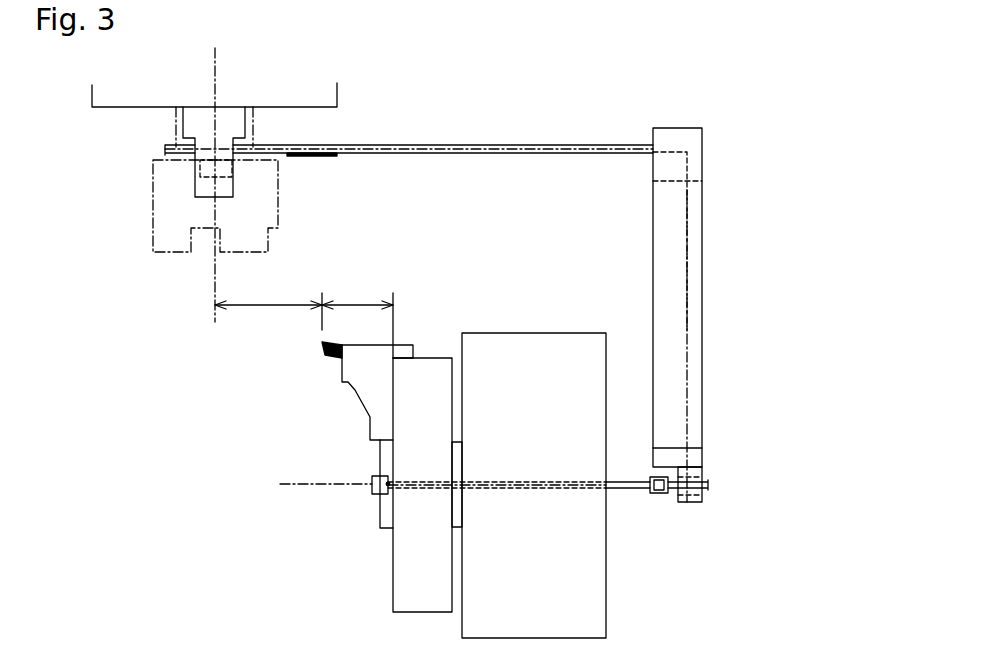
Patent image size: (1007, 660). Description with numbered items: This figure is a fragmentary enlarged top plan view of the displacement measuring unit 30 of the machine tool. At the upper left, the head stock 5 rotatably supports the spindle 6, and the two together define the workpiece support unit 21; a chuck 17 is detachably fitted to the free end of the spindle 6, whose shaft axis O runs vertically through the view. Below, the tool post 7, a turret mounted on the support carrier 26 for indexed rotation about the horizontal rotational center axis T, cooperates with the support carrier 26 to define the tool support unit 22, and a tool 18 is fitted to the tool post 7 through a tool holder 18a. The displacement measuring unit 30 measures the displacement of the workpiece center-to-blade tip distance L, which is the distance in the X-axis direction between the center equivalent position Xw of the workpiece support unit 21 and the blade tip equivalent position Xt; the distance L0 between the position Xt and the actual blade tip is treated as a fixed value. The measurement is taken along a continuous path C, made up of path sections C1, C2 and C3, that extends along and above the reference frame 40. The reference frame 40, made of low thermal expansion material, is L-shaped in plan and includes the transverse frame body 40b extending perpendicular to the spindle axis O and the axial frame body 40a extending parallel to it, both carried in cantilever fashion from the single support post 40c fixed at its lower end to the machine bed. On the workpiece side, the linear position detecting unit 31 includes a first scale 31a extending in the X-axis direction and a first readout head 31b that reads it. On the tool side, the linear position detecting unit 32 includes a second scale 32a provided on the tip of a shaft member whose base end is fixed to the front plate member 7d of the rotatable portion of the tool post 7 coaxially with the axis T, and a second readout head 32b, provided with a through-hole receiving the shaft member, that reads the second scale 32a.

The head stock 5 is at (196, 81).
The spindle 6 is at (253, 125).
The tool post 7 is at (412, 577).
The front plate member 7d is at (385, 457).
The chuck 17 is at (177, 210).
The tool 18 is at (337, 350).
The tool holder 18a is at (378, 395).
The workpiece support unit 21 is at (107, 95).
The tool support unit 22 is at (354, 492).
The support carrier 26 is at (598, 605).
The displacement measuring unit 30 is at (489, 279).
The workpiece side linear position detecting unit 31 is at (409, 189).
The first scale 31a is at (313, 158).
The first readout head 31b is at (233, 178).
The tool side linear position detecting unit 32 is at (599, 512).
The second scale 32a is at (672, 493).
The second readout head 32b is at (690, 502).
The reference frame 40 is at (710, 261).
The axial frame body 40a is at (738, 348).
The transverse frame body 40b is at (612, 148).
The support post 40c is at (668, 181).
The shaft axis O is at (212, 85).
The path C is at (522, 150).
The path section C1 is at (450, 150).
The path section C2 is at (688, 236).
The path section C3 is at (568, 485).
The rotational center axis T is at (320, 486).
The center equivalent position Xw is at (215, 228).
The blade tip equivalent position Xt is at (388, 484).
The workpiece center-to-blade tip distance L is at (268, 293).
The distance L0 is at (357, 318).